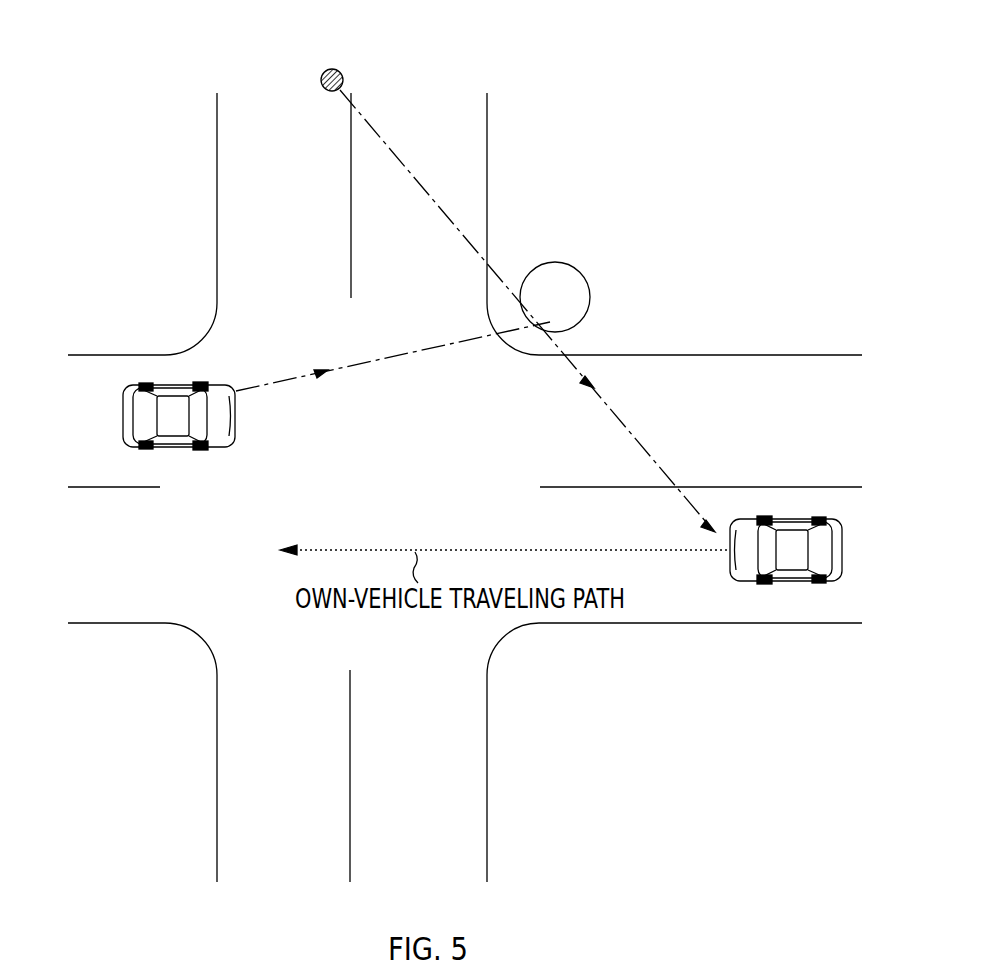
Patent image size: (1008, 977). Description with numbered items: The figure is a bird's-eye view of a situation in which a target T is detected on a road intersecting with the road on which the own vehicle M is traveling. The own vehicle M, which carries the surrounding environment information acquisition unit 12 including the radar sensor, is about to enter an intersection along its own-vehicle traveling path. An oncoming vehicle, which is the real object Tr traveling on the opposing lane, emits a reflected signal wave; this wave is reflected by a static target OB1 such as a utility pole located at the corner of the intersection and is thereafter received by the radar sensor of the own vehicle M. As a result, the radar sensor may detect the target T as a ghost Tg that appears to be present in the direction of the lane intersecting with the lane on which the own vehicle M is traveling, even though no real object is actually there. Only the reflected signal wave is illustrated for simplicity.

The target T is at (372, 277).
The ghost Tg is at (336, 68).
The real object Tr is at (122, 413).
The static target OB1 is at (586, 273).
The own vehicle M is at (809, 588).
The surrounding environment information acquisition unit 12 is at (783, 588).